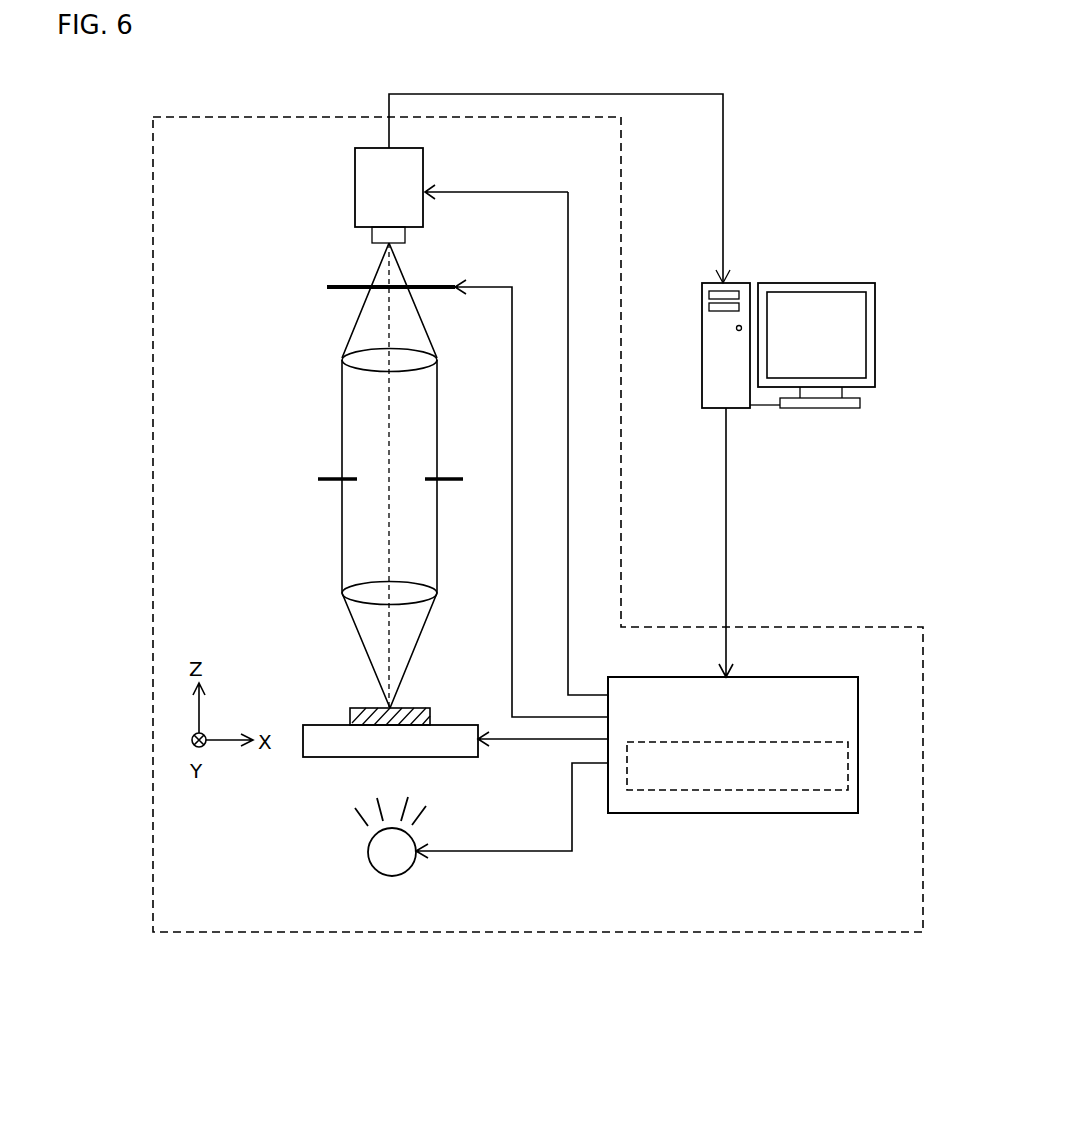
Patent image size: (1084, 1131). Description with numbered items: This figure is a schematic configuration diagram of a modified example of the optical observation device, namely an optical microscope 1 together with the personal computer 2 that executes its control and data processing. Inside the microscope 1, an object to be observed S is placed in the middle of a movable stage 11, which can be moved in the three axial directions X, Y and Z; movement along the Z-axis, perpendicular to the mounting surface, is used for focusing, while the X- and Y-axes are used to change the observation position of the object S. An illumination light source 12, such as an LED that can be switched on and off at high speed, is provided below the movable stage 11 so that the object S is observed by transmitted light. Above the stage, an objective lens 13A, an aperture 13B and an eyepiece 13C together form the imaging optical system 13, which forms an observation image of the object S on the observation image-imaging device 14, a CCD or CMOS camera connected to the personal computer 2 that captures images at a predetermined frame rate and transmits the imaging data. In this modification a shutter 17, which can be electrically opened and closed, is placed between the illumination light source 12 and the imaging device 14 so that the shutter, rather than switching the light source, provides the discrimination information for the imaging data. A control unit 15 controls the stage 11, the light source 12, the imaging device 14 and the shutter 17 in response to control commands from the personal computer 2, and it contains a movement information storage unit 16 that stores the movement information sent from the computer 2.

The optical microscope 1 is at (152, 219).
The personal computer 2 is at (700, 378).
The movable stage 11 is at (467, 725).
The illumination light source 12 is at (372, 871).
The imaging optical system 13 is at (326, 475).
The objective lens 13A is at (340, 573).
The aperture 13B is at (318, 480).
The eyepiece 13C is at (340, 362).
The observation image-imaging device 14 is at (352, 192).
The control unit 15 is at (790, 677).
The movement information storage unit 16 is at (848, 767).
The shutter 17 is at (433, 285).
The object to be observed S is at (426, 708).